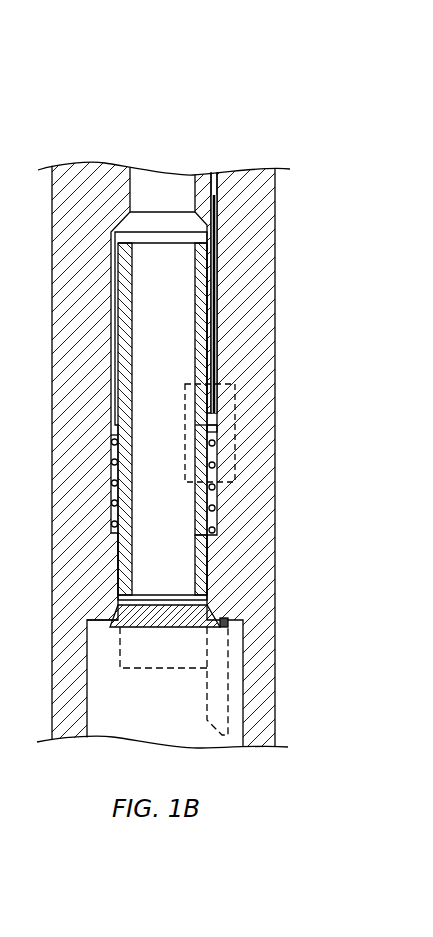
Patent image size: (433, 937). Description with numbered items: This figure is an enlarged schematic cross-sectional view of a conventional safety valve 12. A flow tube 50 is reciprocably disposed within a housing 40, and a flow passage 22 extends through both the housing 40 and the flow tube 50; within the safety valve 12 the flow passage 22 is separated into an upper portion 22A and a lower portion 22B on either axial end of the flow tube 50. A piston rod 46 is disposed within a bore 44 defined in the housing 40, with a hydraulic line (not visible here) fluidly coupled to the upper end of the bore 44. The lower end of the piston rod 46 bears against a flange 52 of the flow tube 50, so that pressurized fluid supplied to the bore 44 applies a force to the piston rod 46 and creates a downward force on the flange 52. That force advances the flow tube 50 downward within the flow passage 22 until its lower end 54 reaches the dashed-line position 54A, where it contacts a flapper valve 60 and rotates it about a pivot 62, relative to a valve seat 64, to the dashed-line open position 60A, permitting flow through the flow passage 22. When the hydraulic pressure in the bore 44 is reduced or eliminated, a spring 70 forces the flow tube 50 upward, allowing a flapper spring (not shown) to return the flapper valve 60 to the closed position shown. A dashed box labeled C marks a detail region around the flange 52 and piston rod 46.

The safety valve 12 is at (176, 55).
The flow passage 22 is at (153, 126).
The upper portion of flow passage 22A is at (157, 168).
The lower portion of flow passage 22B is at (158, 742).
The housing 40 is at (73, 268).
The bore 44 is at (214, 168).
The piston rod 46 is at (213, 267).
The flow tube 50 is at (125, 387).
The flange 52 is at (212, 430).
The lower end of flow tube 54 is at (200, 565).
The position of lower end 54A is at (129, 678).
The flapper valve 60 is at (145, 626).
The open position of flapper valve 60A is at (205, 708).
The pivot 62 is at (227, 623).
The valve seat 64 is at (119, 625).
The spring 70 is at (110, 460).
The detail region C is at (240, 395).